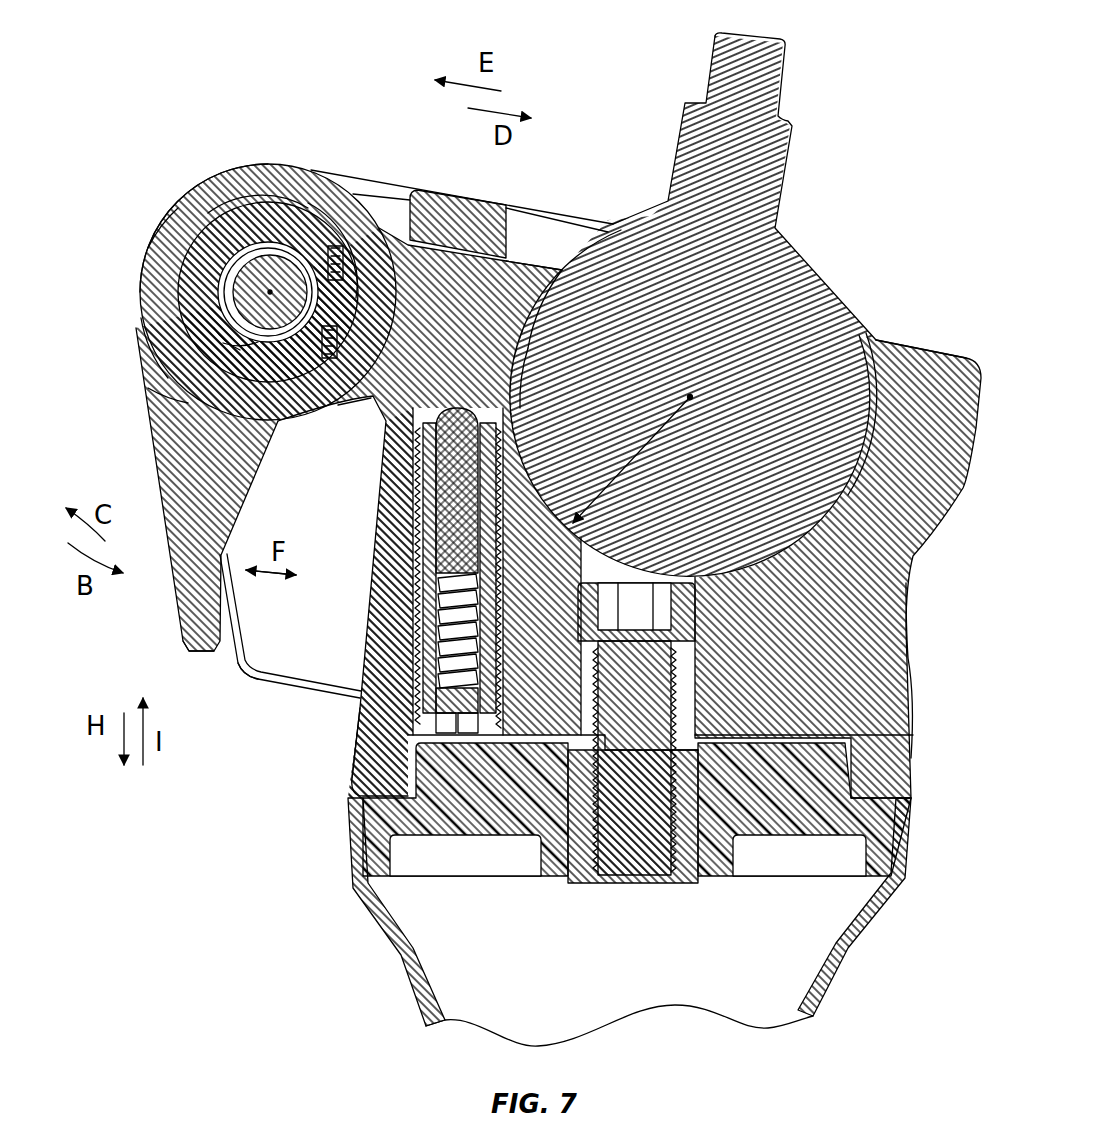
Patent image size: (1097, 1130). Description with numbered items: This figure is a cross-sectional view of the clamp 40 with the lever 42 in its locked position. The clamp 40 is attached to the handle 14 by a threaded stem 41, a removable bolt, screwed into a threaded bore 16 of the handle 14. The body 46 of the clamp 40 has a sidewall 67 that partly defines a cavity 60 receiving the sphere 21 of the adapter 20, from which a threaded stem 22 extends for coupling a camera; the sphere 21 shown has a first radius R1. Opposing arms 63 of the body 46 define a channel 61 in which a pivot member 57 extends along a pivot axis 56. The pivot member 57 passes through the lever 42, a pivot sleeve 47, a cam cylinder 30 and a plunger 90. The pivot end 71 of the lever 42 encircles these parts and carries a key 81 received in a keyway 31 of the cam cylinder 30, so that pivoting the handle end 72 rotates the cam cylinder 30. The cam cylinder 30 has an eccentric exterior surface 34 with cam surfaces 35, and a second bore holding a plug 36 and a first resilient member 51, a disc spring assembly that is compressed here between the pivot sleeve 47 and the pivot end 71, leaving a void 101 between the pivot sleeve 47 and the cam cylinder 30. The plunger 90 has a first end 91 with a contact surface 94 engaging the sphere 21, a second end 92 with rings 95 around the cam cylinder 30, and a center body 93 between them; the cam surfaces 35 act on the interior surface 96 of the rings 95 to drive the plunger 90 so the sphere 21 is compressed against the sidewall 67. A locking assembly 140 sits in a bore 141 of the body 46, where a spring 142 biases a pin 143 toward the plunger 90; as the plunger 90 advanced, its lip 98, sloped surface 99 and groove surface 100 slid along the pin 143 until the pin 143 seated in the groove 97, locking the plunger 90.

The handle 14 is at (393, 950).
The threaded bore 16 is at (610, 870).
The adapter 20 is at (717, 299).
The sphere 21 is at (872, 562).
The threaded stem 22 is at (782, 52).
The cam cylinder 30 is at (228, 195).
The keyway 31 is at (226, 338).
The exterior surface 34 is at (228, 300).
The cam surfaces 35 is at (338, 240).
The plug 36 is at (302, 228).
The clamp 40 is at (292, 757).
The threaded stem 41 is at (688, 868).
The lever 42 is at (174, 540).
The body 46 is at (875, 657).
The pivot sleeve 47 is at (205, 200).
The first resilient member 51 is at (366, 236).
The pivot axis 56 is at (262, 280).
The pivot member 57 is at (222, 352).
The cavity 60 is at (812, 345).
The channel 61 is at (512, 245).
The arms 63 is at (292, 655).
The sidewall 67 is at (897, 333).
The pivot end 71 is at (236, 137).
The handle end 72 is at (165, 625).
The key 81 is at (155, 412).
The plunger 90 is at (405, 393).
The first end 91 is at (542, 262).
The second end 92 is at (135, 250).
The center body 93 is at (437, 255).
The contact surface 94 is at (512, 347).
The rings 95 is at (172, 372).
The interior surface 96 is at (172, 232).
The groove 97 is at (392, 455).
The lip 98 is at (520, 404).
The sloped surface 99 is at (392, 520).
The groove surface 100 is at (362, 398).
The void 101 is at (210, 277).
The locking assembly 140 is at (400, 692).
The bore 141 is at (547, 840).
The spring 142 is at (350, 862).
The pin 143 is at (412, 585).
The first radius R1 is at (578, 500).